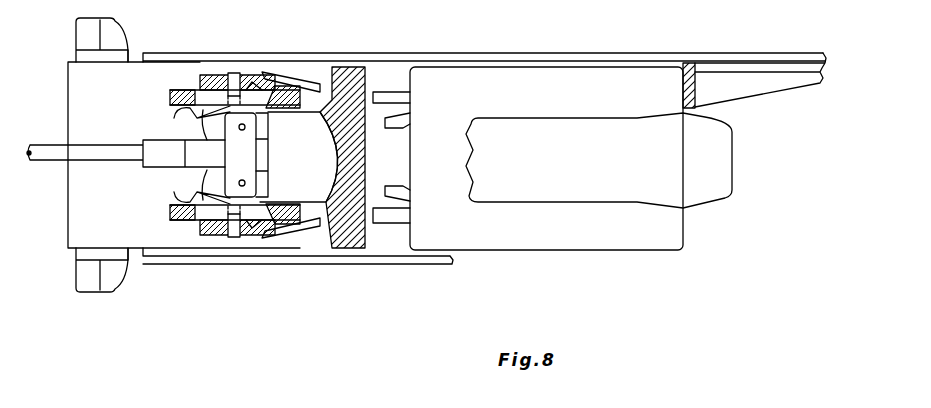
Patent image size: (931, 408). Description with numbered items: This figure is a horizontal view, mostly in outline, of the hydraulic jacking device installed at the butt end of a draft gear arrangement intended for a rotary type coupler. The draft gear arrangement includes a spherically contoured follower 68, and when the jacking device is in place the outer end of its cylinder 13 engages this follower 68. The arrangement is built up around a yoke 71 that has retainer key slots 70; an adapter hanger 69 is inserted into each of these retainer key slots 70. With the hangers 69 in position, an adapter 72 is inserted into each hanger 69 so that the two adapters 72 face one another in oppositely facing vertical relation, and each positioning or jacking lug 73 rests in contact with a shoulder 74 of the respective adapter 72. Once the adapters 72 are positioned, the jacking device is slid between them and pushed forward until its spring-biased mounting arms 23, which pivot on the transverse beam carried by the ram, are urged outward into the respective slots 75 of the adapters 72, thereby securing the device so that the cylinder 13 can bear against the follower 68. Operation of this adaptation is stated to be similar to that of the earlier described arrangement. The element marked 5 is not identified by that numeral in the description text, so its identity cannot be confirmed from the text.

The housing block 5 is at (595, 83).
The cylinder 13 is at (324, 164).
The mounting arm 23 is at (126, 153).
The spherically contoured follower 68 is at (350, 80).
The adapter hanger 69 is at (233, 237).
The retainer key slot 70 is at (255, 236).
The yoke 71 is at (207, 76).
The adapter 72 is at (174, 211).
The jacking lug 73 is at (270, 240).
The shoulder 74 is at (283, 208).
The slot 75 is at (198, 116).